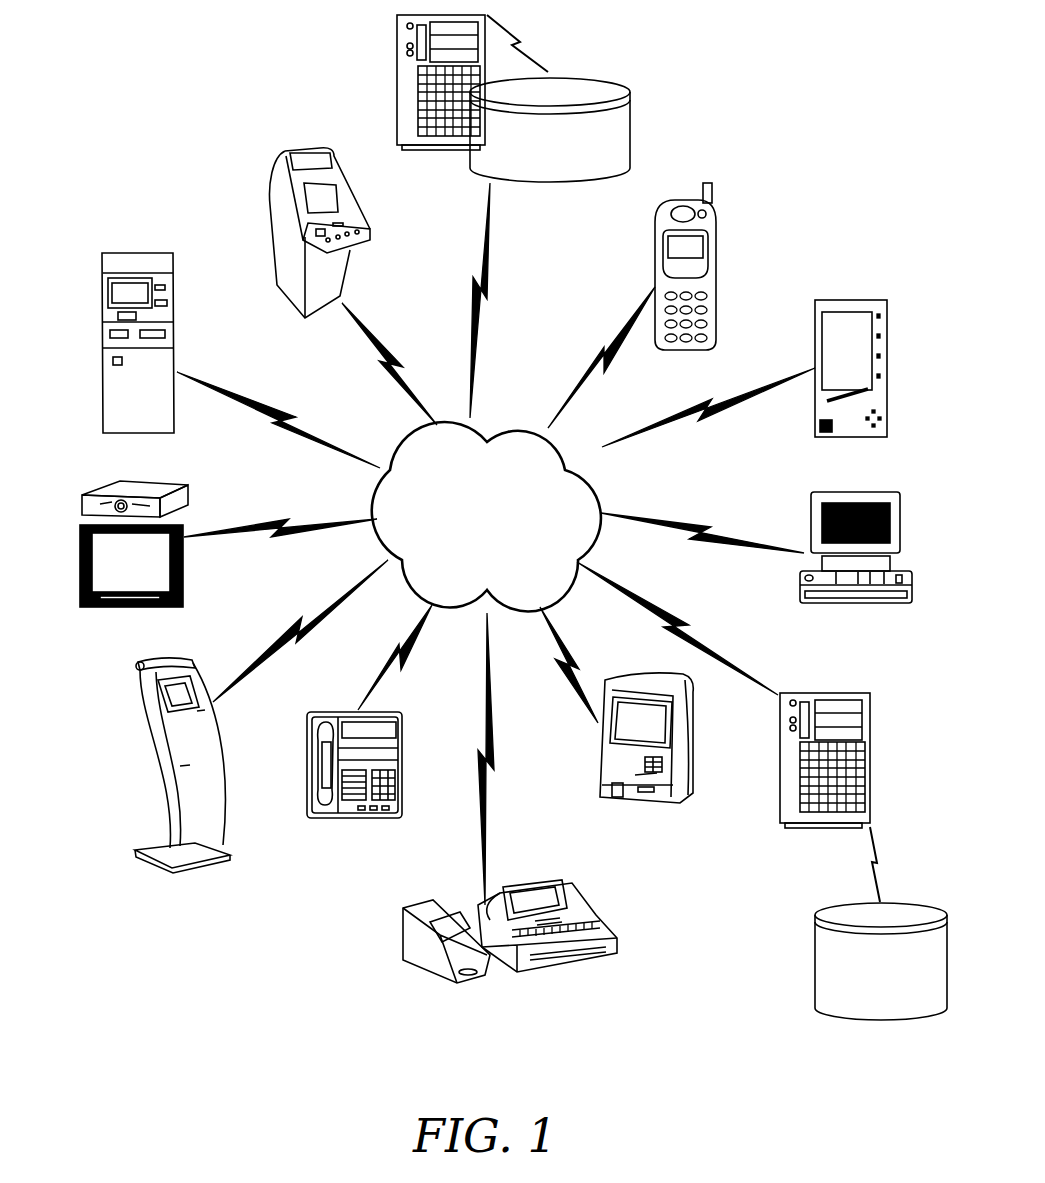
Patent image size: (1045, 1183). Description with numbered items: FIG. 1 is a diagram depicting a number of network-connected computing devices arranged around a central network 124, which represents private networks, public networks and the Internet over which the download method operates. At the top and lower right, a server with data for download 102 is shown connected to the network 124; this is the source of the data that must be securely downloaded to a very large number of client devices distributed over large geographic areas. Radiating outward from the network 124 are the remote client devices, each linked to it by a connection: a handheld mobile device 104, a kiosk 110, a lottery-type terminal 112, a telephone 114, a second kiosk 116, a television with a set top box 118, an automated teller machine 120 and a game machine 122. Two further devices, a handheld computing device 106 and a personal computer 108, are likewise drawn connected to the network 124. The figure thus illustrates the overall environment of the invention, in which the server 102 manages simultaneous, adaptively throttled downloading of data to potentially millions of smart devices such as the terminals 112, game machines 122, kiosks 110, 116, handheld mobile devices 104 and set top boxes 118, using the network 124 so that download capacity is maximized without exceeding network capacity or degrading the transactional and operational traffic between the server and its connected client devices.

The data for download / central transaction server 102 is at (596, 57).
The network connected client device (handheld mobile device) 104 is at (716, 278).
The personal digital assistant 106 is at (887, 382).
The personal computer 108 is at (870, 605).
The network connected client device (kiosk) 110 is at (628, 808).
The network connected client device (terminal) 112 is at (553, 988).
The network connected client device (telephone) 114 is at (357, 820).
The network connected client device (kiosk) 116 is at (163, 744).
The network connected client device (set top box) 118 is at (73, 515).
The network connected client device (ATM) 120 is at (100, 313).
The network connected client device (game machine) 122 is at (276, 264).
The network (private networks, public networks and the Internet) 124 is at (516, 418).